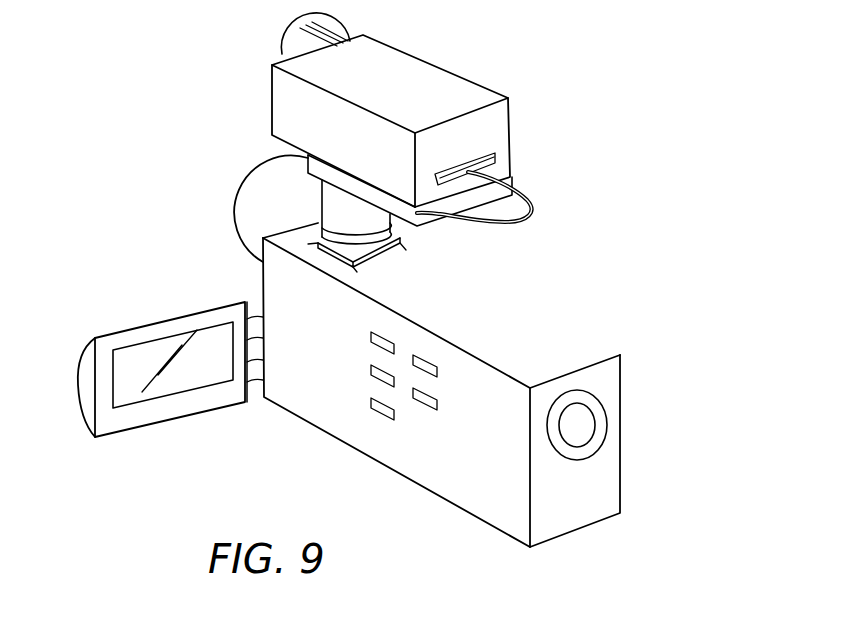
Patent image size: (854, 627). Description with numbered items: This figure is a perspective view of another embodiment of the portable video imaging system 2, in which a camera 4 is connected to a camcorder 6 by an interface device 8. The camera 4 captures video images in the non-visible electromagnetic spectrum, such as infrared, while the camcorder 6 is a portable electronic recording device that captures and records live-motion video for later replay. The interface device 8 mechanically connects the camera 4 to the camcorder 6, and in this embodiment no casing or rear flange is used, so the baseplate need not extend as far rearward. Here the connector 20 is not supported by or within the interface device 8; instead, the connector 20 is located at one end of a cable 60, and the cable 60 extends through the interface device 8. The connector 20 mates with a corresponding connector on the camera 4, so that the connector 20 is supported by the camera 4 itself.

The portable video imaging system 2 is at (643, 78).
The camera 4 is at (420, 67).
The camcorder 6 is at (407, 458).
The interface device 8 is at (432, 213).
The connector 20 is at (488, 162).
The cable 60 is at (527, 197).